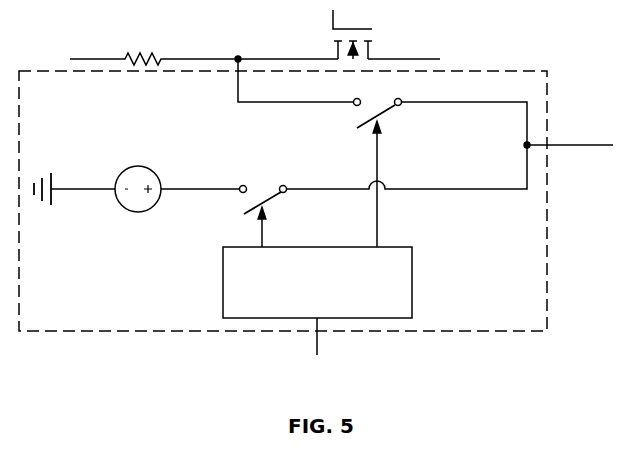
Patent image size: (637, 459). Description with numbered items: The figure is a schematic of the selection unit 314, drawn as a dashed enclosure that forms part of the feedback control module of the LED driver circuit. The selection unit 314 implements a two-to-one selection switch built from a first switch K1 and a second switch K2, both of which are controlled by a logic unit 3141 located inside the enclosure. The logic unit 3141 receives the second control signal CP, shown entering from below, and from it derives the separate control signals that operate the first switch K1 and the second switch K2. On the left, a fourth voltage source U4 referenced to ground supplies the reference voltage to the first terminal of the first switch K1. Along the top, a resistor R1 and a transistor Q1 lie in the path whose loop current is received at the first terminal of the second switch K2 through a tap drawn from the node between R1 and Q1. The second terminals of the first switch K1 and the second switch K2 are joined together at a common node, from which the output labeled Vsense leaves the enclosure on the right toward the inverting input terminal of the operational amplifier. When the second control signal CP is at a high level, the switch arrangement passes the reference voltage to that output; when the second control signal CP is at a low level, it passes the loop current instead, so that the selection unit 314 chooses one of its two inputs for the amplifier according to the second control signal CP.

The selection unit 314 is at (517, 83).
The logic unit 3141 is at (392, 293).
The resistor R1 is at (204, 44).
The transistor Q1 is at (386, 34).
The fourth voltage source U4 is at (137, 178).
The first switch K1 is at (263, 205).
The second switch K2 is at (378, 105).
The sense voltage output Vsense is at (569, 132).
The second control signal CP is at (315, 351).